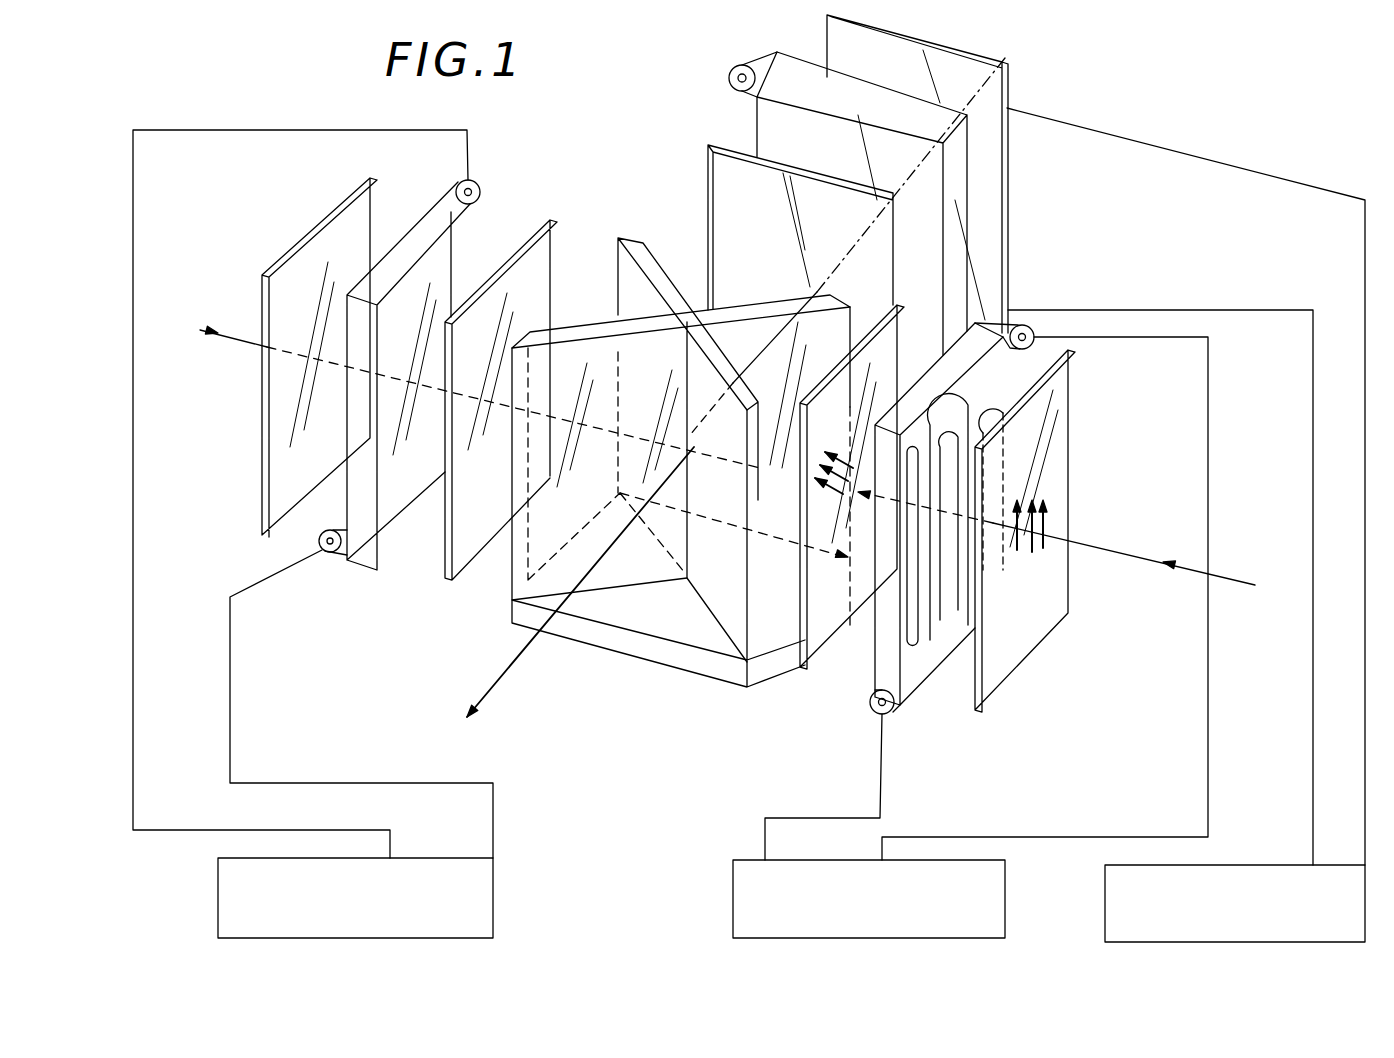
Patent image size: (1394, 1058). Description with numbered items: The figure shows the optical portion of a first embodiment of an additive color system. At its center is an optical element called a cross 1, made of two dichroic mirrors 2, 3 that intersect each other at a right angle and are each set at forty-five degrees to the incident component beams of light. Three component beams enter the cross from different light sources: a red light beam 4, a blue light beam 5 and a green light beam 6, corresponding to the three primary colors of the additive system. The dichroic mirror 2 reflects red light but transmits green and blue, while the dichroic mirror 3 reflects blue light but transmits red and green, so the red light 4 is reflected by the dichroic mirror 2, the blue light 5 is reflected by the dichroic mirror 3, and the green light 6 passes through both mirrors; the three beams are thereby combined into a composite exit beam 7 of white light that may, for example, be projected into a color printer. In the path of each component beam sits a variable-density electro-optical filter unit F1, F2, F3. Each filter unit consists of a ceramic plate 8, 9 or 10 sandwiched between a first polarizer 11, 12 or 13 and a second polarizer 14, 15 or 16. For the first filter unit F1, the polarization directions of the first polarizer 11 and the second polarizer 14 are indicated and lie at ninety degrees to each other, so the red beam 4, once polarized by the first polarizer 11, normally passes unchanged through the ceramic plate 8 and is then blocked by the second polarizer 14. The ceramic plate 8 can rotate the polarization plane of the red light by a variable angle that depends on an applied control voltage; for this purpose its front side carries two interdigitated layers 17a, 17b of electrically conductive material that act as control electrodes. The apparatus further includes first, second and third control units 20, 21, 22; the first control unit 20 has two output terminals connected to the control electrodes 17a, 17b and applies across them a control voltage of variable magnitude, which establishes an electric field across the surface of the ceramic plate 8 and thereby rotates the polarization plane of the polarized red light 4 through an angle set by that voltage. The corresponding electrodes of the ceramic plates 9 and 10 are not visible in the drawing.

The cross 1 is at (643, 674).
The dichroic mirror 2 is at (512, 598).
The dichroic mirror 3 is at (740, 650).
The red light beam 4 is at (1100, 553).
The blue light beam 5 is at (200, 330).
The green light beam 6 is at (1015, 45).
The composite exit beam 7 is at (493, 684).
The ceramic plate 8 is at (882, 653).
The ceramic plate 9 is at (952, 193).
The ceramic plate 10 is at (357, 552).
The first polarizer 11 is at (990, 672).
The first polarizer 12 is at (1007, 218).
The first polarizer 13 is at (262, 470).
The second polarizer 14 is at (802, 660).
The second polarizer 15 is at (710, 178).
The second polarizer 16 is at (446, 580).
The interdigitated layer 17a is at (918, 682).
The interdigitated layer 17b is at (1000, 358).
The first control unit 20 is at (733, 912).
The second control unit 21 is at (1105, 907).
The third control unit 22 is at (218, 898).
The variable-density electro-optical filter unit F1 is at (942, 740).
The variable-density electro-optical filter unit F2 is at (740, 57).
The variable-density electro-optical filter unit F3 is at (502, 218).